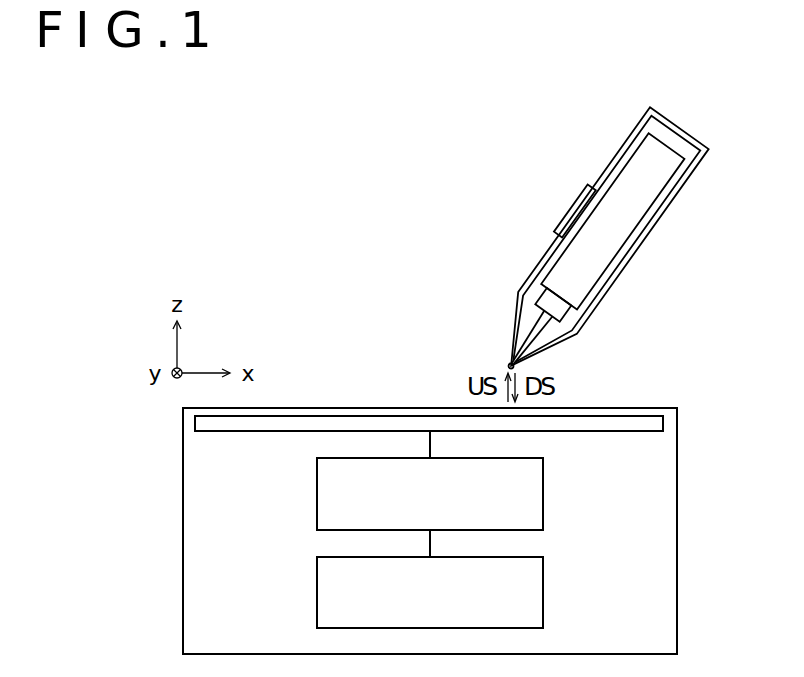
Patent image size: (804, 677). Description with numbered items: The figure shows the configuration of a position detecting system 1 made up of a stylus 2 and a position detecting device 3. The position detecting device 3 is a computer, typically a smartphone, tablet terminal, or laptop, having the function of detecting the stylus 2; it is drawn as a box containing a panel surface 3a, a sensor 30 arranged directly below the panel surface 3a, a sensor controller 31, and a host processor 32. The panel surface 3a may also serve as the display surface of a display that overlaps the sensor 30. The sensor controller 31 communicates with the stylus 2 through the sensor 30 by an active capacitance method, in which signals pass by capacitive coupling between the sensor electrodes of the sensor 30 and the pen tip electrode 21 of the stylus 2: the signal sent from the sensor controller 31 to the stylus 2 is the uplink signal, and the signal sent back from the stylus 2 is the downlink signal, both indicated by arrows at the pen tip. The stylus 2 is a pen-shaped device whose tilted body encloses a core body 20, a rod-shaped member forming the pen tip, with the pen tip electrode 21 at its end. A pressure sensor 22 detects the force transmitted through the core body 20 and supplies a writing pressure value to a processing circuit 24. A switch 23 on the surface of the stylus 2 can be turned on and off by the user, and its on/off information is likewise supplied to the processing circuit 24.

The position detecting system 1 is at (294, 195).
The stylus 2 is at (685, 130).
The position detecting device 3 is at (183, 542).
The panel surface 3a is at (380, 407).
The core body 20 is at (533, 332).
The pen tip electrode 21 is at (507, 363).
The pressure sensor 22 is at (547, 293).
The switch 23 is at (562, 223).
The processing circuit 24 is at (613, 177).
The sensor 30 is at (611, 433).
The sensor controller 31 is at (317, 492).
The host processor 32 is at (317, 590).